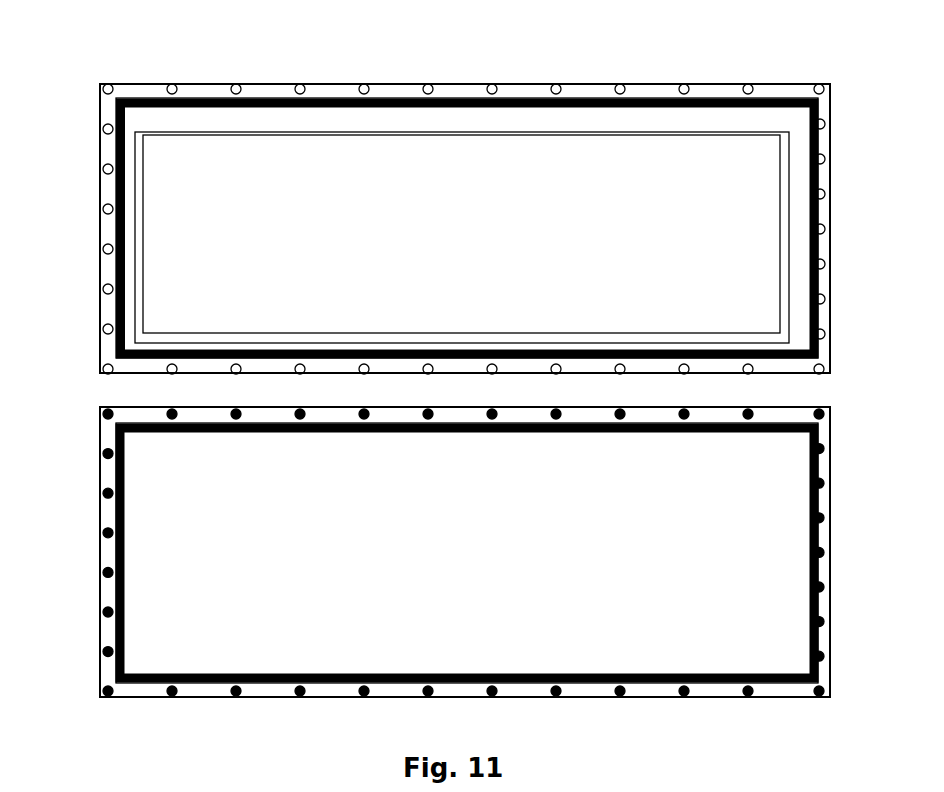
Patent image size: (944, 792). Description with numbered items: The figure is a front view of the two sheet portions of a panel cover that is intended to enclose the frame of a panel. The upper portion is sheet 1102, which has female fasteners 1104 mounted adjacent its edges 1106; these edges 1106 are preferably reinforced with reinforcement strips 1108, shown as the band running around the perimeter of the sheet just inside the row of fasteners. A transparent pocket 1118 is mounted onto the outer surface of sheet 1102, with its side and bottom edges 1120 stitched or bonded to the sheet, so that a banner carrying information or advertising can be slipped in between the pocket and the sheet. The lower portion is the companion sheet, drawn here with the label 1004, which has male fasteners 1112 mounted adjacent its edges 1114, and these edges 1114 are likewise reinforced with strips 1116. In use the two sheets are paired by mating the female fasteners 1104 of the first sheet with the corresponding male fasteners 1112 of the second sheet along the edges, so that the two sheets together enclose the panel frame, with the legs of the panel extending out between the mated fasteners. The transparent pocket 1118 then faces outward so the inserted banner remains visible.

The panel 1004 is at (481, 578).
The sheet 1102 is at (415, 125).
The female fasteners 1104 is at (168, 89).
The edges 1106 is at (262, 85).
The reinforcement strips 1108 is at (465, 90).
The male fasteners 1112 is at (102, 488).
The edges 1114 is at (202, 698).
The strips 1116 is at (661, 688).
The transparent pocket 1118 is at (253, 215).
The side and bottom edges 1120 is at (143, 273).